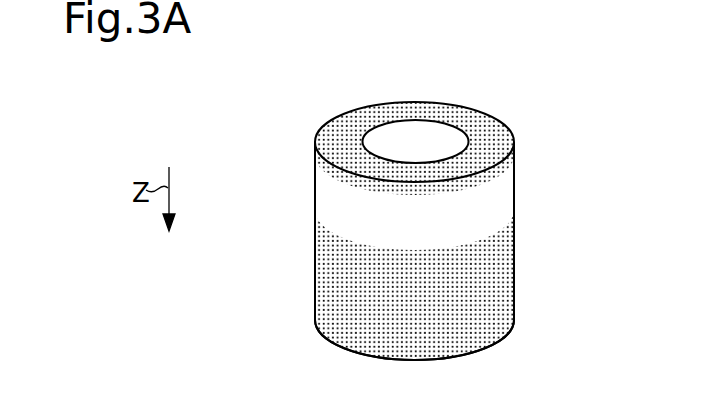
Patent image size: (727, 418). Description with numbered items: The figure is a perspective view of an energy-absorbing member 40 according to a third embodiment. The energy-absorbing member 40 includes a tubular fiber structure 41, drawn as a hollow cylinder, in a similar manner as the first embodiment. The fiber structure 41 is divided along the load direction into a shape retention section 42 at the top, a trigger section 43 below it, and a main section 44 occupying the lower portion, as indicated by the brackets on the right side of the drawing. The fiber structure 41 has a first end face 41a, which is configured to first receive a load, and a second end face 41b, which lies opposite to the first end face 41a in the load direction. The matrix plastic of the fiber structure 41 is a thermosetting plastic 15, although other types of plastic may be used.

The thermosetting plastic 15 is at (391, 229).
The energy-absorbing member 40 is at (426, 229).
The tubular fiber structure 41 is at (412, 229).
The first end face 41a is at (463, 113).
The second end face 41b is at (483, 352).
The shape retention section 42 is at (527, 142).
The trigger section 43 is at (527, 170).
The main section 44 is at (527, 217).